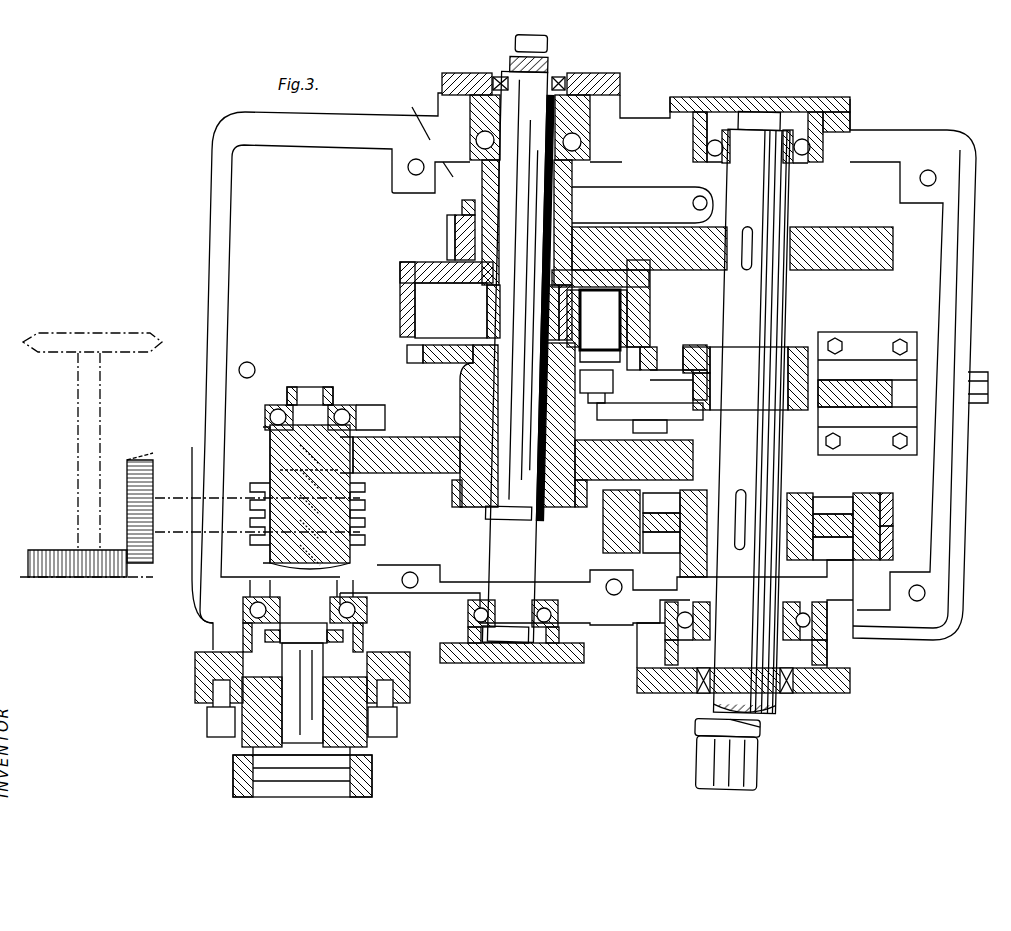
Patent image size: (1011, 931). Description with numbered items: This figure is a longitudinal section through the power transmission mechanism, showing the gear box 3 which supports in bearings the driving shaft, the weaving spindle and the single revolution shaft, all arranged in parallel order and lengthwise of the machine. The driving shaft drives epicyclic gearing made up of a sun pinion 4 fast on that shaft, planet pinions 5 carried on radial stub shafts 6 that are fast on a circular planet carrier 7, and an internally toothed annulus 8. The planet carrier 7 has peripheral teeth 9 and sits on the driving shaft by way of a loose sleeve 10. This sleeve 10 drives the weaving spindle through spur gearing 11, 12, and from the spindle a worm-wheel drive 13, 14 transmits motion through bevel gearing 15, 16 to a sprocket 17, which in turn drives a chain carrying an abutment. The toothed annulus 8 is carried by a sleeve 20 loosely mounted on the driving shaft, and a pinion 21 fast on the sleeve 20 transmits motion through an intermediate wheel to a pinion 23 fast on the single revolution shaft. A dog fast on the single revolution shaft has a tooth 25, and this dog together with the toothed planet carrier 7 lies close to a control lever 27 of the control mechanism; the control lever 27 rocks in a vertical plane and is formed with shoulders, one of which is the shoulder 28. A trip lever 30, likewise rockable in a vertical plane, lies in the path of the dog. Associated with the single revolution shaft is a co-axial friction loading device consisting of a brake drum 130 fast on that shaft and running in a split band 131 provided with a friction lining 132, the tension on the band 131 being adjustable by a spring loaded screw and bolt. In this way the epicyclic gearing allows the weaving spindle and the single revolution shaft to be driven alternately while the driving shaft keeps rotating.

The gear box 3 is at (975, 170).
The sun pinion 4 is at (487, 310).
The planet pinions 5 is at (547, 315).
The radial stub shafts 6 is at (608, 311).
The planet carrier 7 is at (436, 360).
The internally toothed annulus 8 is at (407, 288).
The peripheral teeth 9 is at (407, 353).
The loose sleeve 10 is at (475, 397).
The spur gear 11 is at (413, 467).
The spur gear 12 is at (272, 448).
The worm 13 is at (362, 515).
The worm-wheel 14 is at (280, 475).
The bevel gear 15 is at (148, 480).
The bevel gear 16 is at (85, 572).
The sprocket 17 is at (97, 340).
The sleeve 20 is at (577, 201).
The pinion 21 is at (457, 237).
The pinion 23 is at (840, 237).
The tooth 25 is at (703, 362).
The control lever 27 is at (663, 360).
The shoulder 28 is at (657, 350).
The trip lever 30 is at (837, 385).
The brake drum 130 is at (862, 493).
The split band 131 is at (893, 530).
The friction lining 132 is at (893, 510).